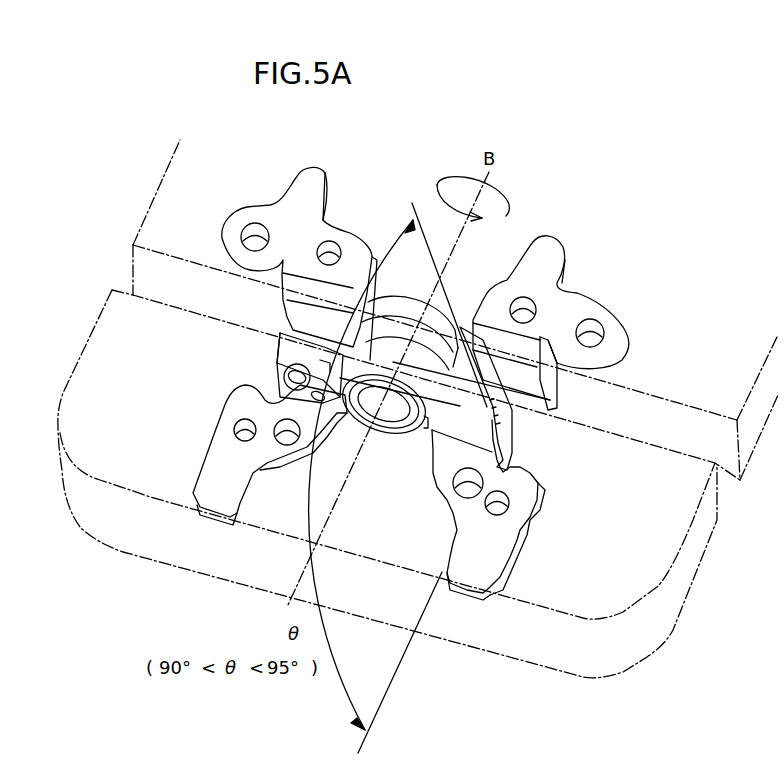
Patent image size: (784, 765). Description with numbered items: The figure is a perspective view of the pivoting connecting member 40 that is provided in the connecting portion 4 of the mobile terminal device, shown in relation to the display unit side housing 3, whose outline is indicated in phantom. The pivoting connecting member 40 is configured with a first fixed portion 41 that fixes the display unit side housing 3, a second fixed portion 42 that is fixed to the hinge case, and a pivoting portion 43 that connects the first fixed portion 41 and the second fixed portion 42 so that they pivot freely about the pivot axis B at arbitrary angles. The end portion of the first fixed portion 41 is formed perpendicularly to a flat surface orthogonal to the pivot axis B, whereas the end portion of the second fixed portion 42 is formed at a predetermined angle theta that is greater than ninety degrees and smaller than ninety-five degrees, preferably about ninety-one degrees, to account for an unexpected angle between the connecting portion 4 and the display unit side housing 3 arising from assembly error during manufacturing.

The display unit side housing 3 is at (157, 188).
The connecting portion 4 is at (148, 552).
The pivoting connecting member 40 is at (412, 352).
The first fixed portion 41 is at (345, 233).
The second fixed portion 42 is at (208, 487).
The pivoting portion 43 is at (520, 415).